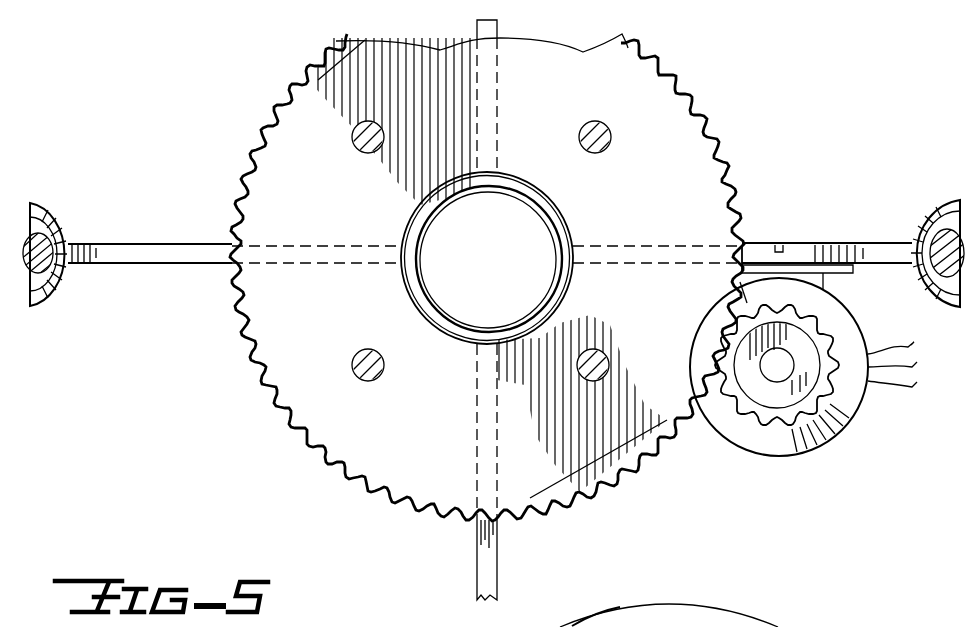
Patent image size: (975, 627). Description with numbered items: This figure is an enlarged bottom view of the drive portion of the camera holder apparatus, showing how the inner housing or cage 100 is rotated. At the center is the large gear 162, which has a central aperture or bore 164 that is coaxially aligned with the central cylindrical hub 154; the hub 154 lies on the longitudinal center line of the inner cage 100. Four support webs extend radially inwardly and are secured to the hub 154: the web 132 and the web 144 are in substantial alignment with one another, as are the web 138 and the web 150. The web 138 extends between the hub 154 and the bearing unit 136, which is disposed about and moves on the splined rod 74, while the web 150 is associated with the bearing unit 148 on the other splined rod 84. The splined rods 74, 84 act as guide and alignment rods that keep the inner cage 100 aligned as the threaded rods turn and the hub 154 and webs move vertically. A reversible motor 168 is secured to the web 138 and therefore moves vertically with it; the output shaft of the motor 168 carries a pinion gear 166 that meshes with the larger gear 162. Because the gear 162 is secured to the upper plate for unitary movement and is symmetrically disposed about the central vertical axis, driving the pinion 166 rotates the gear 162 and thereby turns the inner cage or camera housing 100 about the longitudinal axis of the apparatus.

The inner housing or cage 100 is at (798, 617).
The splined rod 74 is at (922, 276).
The splined rod 84 is at (50, 222).
The support web 132 is at (478, 550).
The bearing unit 136 is at (940, 210).
The support web 138 is at (848, 242).
The support web 144 is at (478, 29).
The bearing unit 148 is at (57, 282).
The support web 150 is at (166, 243).
The central cylindrical hub 154 is at (513, 182).
The gear 162 is at (592, 460).
The central aperture or bore 164 is at (553, 228).
The pinion gear 166 is at (763, 418).
The reversible motor 168 is at (773, 440).